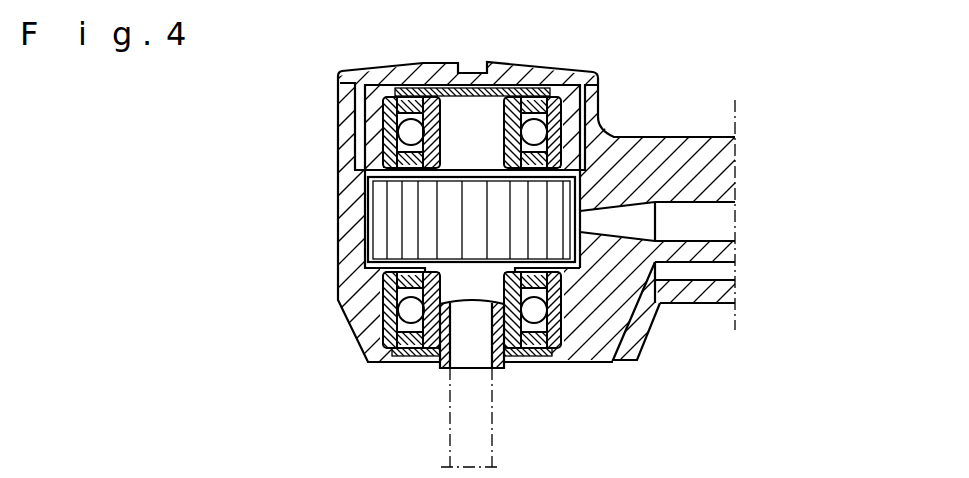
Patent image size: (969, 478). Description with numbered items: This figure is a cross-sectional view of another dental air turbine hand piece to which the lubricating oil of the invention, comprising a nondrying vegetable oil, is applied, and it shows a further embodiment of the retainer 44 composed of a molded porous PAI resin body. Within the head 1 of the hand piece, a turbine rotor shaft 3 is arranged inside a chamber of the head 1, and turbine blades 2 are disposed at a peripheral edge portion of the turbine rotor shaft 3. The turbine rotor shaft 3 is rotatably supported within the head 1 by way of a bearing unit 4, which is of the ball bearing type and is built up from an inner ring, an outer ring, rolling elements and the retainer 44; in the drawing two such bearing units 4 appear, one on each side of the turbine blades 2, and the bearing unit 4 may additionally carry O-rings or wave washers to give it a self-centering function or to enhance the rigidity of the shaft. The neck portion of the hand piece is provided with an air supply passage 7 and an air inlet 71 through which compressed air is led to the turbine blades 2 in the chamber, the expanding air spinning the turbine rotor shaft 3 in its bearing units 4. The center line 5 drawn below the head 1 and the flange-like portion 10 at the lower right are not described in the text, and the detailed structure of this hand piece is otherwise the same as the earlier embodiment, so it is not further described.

The head 1 is at (350, 48).
The turbine blades 2 is at (412, 217).
The turbine rotor shaft 3 is at (427, 362).
The bearing unit 4 is at (387, 130).
The center axis line 5 is at (493, 405).
The air supply passage 7 is at (633, 215).
The mounting flange 10 is at (637, 312).
The retainer 44 is at (393, 99).
The air inlet 71 is at (590, 213).